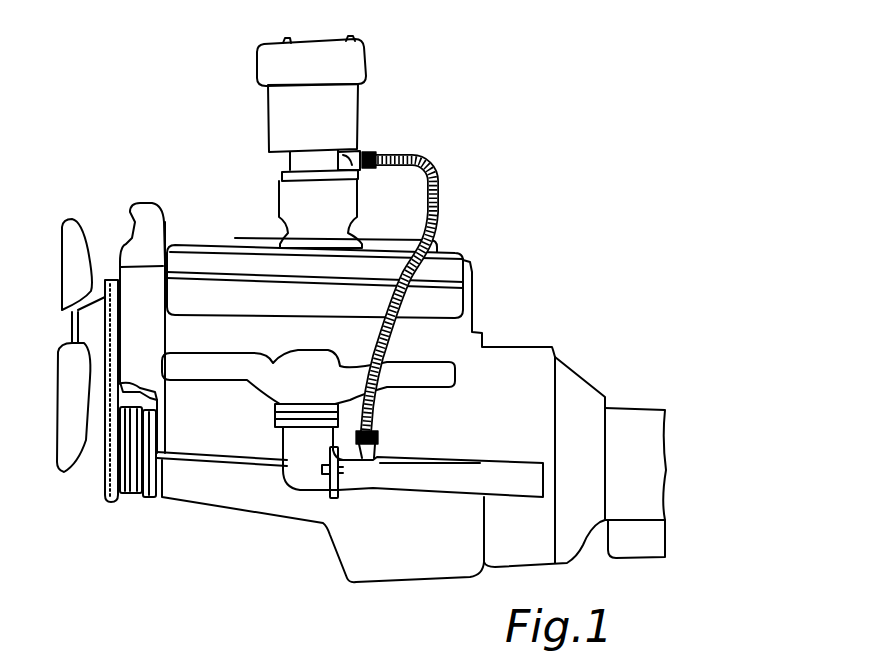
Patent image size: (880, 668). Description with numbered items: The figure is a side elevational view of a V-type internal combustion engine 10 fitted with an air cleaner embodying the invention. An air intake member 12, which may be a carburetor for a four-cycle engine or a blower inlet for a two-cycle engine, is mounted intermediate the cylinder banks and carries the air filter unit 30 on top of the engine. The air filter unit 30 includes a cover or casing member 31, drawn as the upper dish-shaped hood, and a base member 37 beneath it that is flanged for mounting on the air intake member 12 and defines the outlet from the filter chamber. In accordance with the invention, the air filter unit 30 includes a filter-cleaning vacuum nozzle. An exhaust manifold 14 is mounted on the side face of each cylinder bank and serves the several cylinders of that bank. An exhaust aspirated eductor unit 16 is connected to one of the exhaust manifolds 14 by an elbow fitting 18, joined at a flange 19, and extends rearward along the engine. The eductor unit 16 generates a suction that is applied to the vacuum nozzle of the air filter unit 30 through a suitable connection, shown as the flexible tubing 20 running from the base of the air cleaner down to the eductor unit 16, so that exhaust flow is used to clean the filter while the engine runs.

The internal combustion engine 10 is at (513, 343).
The air intake member 12 is at (283, 196).
The exhaust manifold 14 is at (215, 370).
The exhaust aspirated eductor unit 16 is at (443, 462).
The elbow fitting 18 is at (300, 470).
The flange 19 is at (330, 490).
The flexible tubing 20 is at (437, 210).
The air filter unit 30 is at (262, 99).
The cover member 31 is at (368, 68).
The base member 37 is at (300, 162).